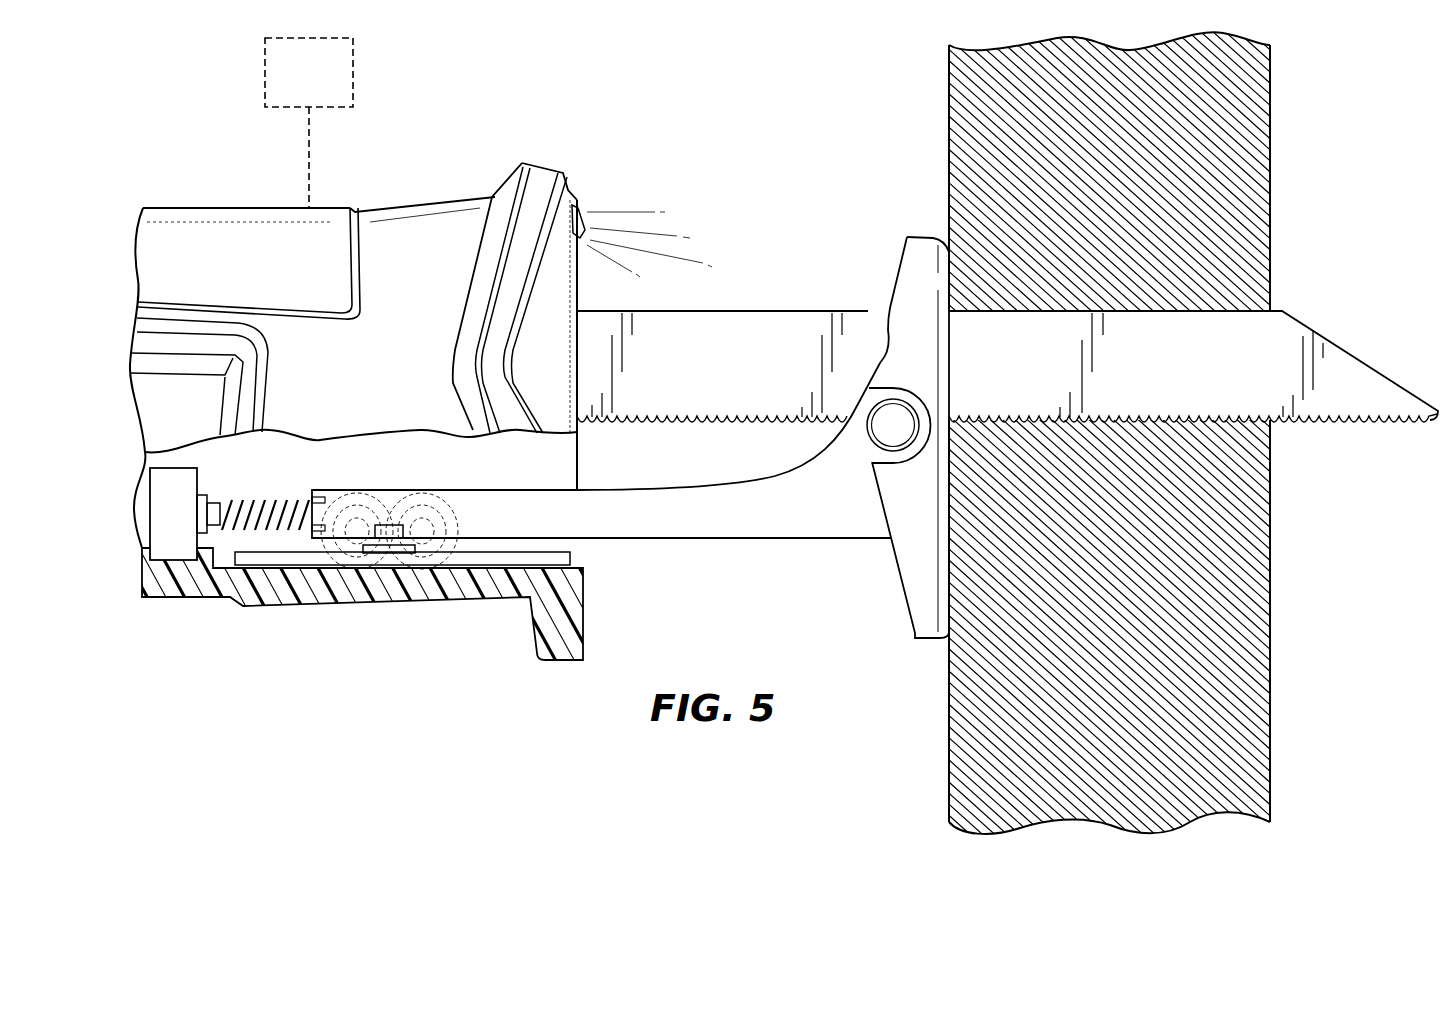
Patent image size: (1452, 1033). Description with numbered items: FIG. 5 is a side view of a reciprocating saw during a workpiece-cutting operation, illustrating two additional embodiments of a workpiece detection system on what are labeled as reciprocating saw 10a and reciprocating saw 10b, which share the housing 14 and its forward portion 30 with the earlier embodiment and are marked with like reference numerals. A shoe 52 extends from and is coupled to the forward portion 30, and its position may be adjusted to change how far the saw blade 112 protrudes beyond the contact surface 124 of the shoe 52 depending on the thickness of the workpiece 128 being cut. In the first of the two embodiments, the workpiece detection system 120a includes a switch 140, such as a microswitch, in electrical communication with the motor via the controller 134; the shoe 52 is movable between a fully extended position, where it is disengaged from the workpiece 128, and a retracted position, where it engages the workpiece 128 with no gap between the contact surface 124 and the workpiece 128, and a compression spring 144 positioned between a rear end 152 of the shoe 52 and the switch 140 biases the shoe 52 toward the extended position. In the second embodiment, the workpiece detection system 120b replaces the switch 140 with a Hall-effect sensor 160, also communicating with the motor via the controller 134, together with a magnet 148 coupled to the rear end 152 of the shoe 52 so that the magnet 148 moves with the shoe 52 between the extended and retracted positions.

The reciprocating saw 10a is at (389, 140).
The reciprocating saw 10b is at (759, 375).
The housing 14 is at (235, 207).
The forward portion 30 is at (448, 202).
The shoe 52 is at (896, 560).
The saw blade 112 is at (1342, 350).
The workpiece detection system 120a is at (298, 414).
The workpiece detection system 120b is at (290, 648).
The contact surface 124 is at (950, 558).
The workpiece 128 is at (1227, 580).
The controller 134 is at (291, 85).
The switch 140 is at (177, 533).
The compression spring 144 is at (248, 530).
The magnet 148 is at (410, 527).
The rear end 152 is at (338, 490).
The Hall-effect sensor 160 is at (373, 553).